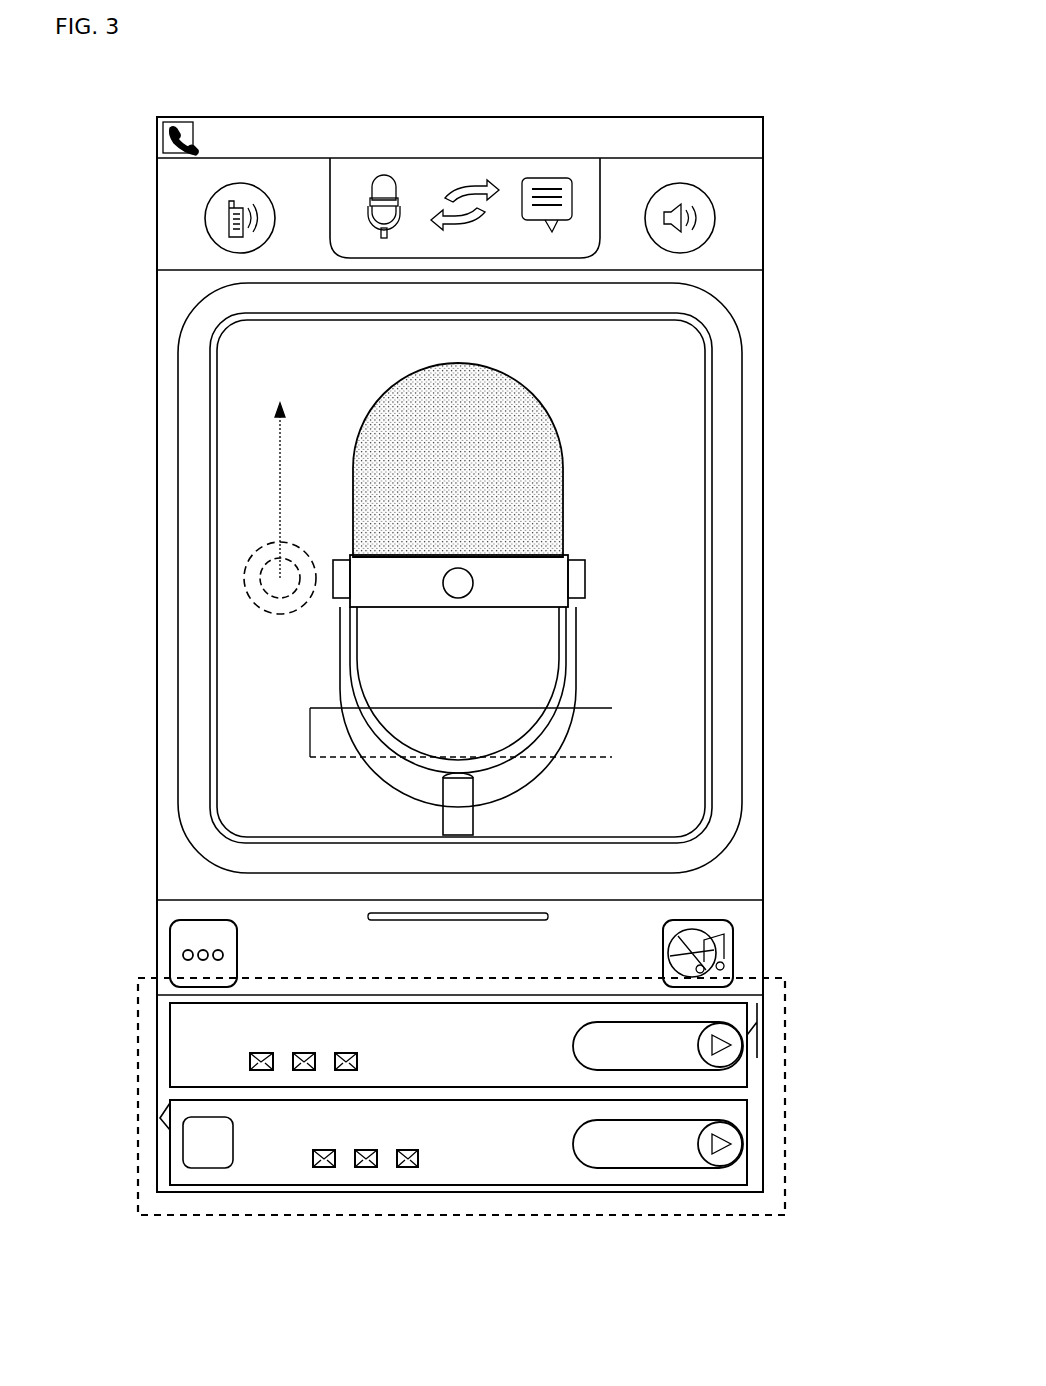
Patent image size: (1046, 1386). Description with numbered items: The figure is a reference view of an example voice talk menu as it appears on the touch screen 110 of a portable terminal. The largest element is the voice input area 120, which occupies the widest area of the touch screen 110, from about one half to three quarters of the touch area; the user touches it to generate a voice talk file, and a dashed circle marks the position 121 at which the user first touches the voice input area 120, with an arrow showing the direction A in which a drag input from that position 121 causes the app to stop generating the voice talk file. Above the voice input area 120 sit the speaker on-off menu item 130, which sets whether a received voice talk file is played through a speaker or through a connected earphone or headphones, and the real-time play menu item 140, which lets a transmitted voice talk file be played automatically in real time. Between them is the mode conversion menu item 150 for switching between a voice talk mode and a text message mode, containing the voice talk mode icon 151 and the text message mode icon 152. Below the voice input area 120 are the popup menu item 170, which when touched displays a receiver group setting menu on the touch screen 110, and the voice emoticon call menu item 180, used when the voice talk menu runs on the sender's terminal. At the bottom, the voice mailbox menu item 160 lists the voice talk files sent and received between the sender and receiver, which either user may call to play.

The touch screen 110 is at (748, 307).
The voice input area 120 is at (732, 520).
The position 121 is at (252, 562).
The speaker on-off menu item 130 is at (690, 195).
The real-time play menu item 140 is at (206, 218).
The mode conversion menu item 150 is at (470, 161).
The voice talk mode icon 151 is at (384, 180).
The text message mode icon 152 is at (557, 180).
The voice mailbox menu item 160 is at (488, 1212).
The popup menu item 170 is at (183, 911).
The voice emoticon call menu item 180 is at (718, 920).